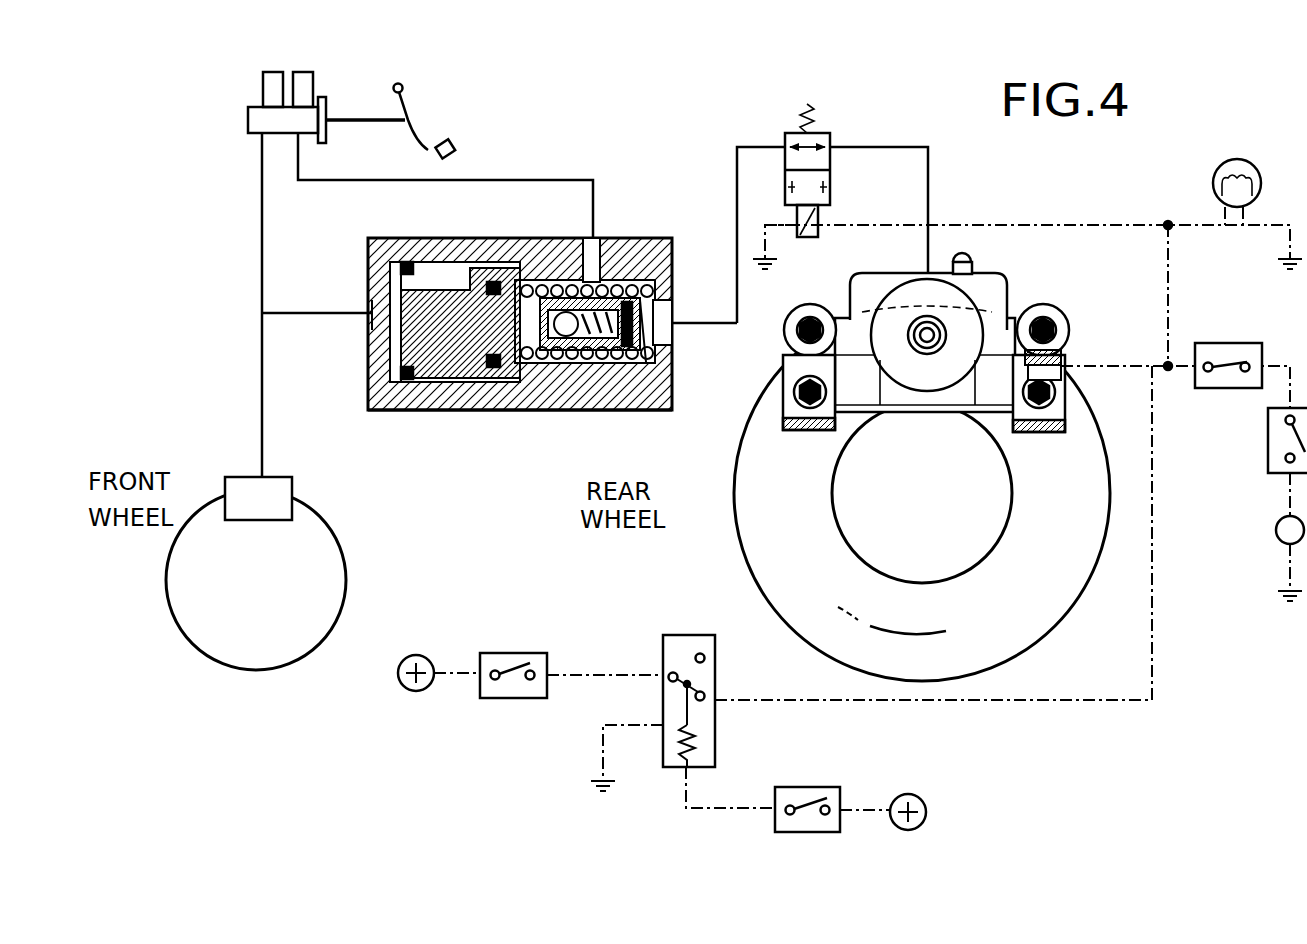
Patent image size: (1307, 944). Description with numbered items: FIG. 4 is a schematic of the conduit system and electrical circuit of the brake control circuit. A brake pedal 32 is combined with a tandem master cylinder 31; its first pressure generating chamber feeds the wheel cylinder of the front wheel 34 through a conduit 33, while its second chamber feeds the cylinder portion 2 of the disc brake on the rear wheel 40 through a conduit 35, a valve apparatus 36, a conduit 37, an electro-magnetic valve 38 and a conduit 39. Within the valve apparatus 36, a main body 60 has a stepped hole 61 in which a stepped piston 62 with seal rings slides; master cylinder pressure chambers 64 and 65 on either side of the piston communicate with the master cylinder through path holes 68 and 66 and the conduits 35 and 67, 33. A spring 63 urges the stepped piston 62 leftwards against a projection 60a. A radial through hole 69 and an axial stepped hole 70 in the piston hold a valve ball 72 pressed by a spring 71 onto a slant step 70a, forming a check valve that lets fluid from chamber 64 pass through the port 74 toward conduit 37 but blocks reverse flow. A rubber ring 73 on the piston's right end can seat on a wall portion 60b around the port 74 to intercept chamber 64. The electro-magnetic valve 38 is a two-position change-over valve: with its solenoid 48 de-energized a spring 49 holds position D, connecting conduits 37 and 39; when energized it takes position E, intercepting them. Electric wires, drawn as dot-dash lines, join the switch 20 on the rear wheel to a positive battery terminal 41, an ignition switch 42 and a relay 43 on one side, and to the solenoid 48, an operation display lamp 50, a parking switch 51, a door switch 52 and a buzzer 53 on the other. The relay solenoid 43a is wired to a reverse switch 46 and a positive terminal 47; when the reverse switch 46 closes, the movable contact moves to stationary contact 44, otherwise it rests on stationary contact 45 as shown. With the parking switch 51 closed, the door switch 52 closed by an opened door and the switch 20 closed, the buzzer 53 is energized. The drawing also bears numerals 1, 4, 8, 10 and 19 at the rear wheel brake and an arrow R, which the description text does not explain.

The brake caliper 1 is at (905, 266).
The cylinder portion 2 is at (901, 382).
The piston 4 is at (928, 380).
The brake pad 8 is at (986, 382).
The brake disc 10 is at (737, 491).
The bleeder valve 19 is at (992, 340).
The switch 20 is at (1063, 360).
The tandem master cylinder 31 is at (325, 88).
The brake pedal 32 is at (425, 150).
The conduit 33 is at (260, 237).
The front wheel 34 is at (282, 492).
The conduit 35 is at (512, 180).
The valve apparatus 36 is at (670, 240).
The conduit 37 is at (737, 152).
The electro-magnetic valve 38 is at (830, 130).
The conduit 39 is at (930, 200).
The rear wheel 40 is at (732, 534).
The positive terminal of a battery 41 is at (424, 655).
The ignition switch 42 is at (520, 652).
The relay 43 is at (660, 645).
The solenoid of the relay 43a is at (678, 745).
The stationary contact 44 is at (706, 660).
The stationary contact 45 is at (706, 700).
The reverse switch 46 is at (810, 787).
The positive terminal of a battery 47 is at (908, 794).
The solenoid 48 is at (803, 237).
The spring 49 is at (800, 118).
The operation display lamp 50 is at (1214, 178).
The parking switch 51 is at (1230, 343).
The door switch 52 is at (1268, 440).
The buzzer 53 is at (1276, 530).
The main body 60 is at (483, 267).
The projection 60a is at (406, 261).
The wall portion 60b is at (650, 360).
The stepped hole 61 is at (432, 382).
The stepped piston 62 is at (476, 352).
The spring 63 is at (625, 276).
The master cylinder pressure chamber 64 is at (662, 412).
The master cylinder pressure chamber 65 is at (389, 348).
The path hole 66 is at (372, 326).
The conduit 67 is at (304, 312).
The path hole 68 is at (594, 258).
The radial through hole 69 is at (530, 372).
The axial stepped hole 70 is at (566, 352).
The slant step 70a is at (548, 290).
The spring 71 is at (603, 342).
The valve ball 72 is at (586, 352).
The rubber ring 73 is at (640, 308).
The port 74 is at (655, 343).
The position D is at (815, 157).
The position E is at (815, 177).
The rotation direction R is at (1108, 408).